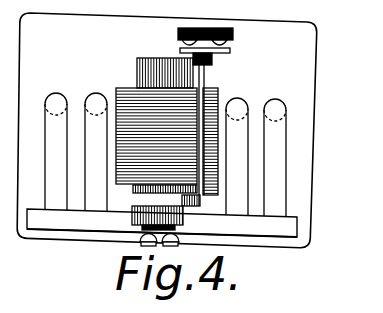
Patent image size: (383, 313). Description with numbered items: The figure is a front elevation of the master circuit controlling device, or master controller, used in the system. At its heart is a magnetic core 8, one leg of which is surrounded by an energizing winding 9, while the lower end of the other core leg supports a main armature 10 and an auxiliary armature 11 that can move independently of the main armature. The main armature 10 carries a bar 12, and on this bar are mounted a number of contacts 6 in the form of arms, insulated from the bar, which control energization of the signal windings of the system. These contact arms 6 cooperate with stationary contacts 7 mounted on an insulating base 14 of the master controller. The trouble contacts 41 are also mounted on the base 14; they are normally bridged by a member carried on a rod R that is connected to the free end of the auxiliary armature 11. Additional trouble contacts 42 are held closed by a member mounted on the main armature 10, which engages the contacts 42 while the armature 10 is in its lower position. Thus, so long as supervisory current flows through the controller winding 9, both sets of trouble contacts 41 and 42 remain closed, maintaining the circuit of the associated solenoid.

The insulating base 14 is at (312, 77).
The bar 12 is at (72, 222).
The stationary contacts 7 is at (283, 115).
The contacts 6 is at (242, 187).
The energizing winding 9 is at (130, 98).
The magnetic core 8 is at (138, 58).
The trouble contacts 41 is at (182, 45).
The rod R is at (206, 82).
The auxiliary armature 11 is at (190, 206).
The main armature 10 is at (137, 225).
The additional trouble contacts 42 is at (145, 243).